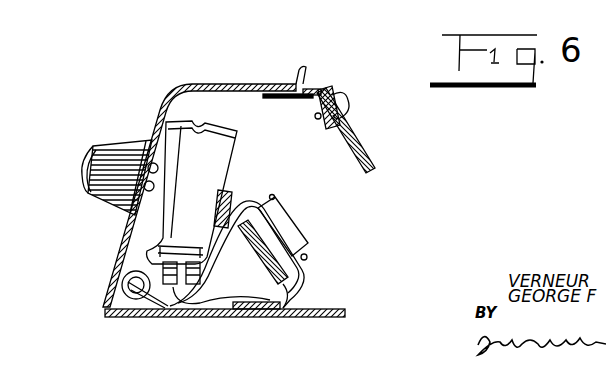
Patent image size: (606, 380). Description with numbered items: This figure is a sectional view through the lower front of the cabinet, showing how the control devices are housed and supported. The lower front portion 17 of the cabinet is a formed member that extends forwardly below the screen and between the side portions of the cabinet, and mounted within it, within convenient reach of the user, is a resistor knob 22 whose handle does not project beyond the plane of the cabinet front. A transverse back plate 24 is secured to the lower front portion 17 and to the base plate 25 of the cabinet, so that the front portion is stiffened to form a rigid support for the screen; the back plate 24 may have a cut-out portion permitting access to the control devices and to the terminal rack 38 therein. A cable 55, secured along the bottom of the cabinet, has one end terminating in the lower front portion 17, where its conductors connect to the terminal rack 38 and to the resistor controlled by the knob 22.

The lower front portion of the cabinet 17 is at (176, 88).
The resistor knob 22 is at (86, 200).
The transverse back plate 24 is at (357, 130).
The base plate 25 is at (275, 316).
The terminal rack 38 is at (284, 216).
The cable 55 is at (118, 282).